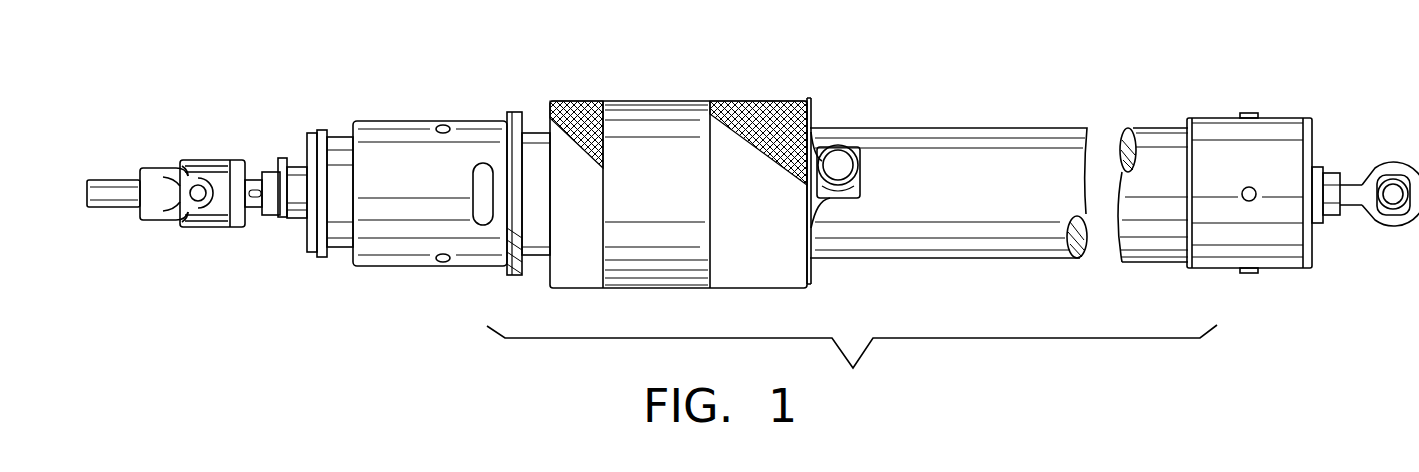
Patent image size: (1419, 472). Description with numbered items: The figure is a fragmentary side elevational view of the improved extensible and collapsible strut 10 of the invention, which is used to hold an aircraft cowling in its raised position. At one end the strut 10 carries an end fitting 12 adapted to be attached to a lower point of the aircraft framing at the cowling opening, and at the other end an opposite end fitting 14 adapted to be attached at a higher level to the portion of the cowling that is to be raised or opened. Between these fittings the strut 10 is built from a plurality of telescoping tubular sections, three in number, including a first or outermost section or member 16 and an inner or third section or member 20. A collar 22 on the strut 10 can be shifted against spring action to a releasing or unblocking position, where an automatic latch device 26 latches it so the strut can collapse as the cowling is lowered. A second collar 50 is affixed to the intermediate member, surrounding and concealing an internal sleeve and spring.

The strut 10 is at (922, 106).
The end fitting 12 is at (218, 168).
The opposite end fitting 14 is at (1373, 188).
The first or outermost section or member 16 is at (537, 130).
The inner or third section or member 20 is at (297, 172).
The collar 22 is at (653, 108).
The automatic latch device 26 is at (842, 145).
The second collar 50 is at (388, 128).